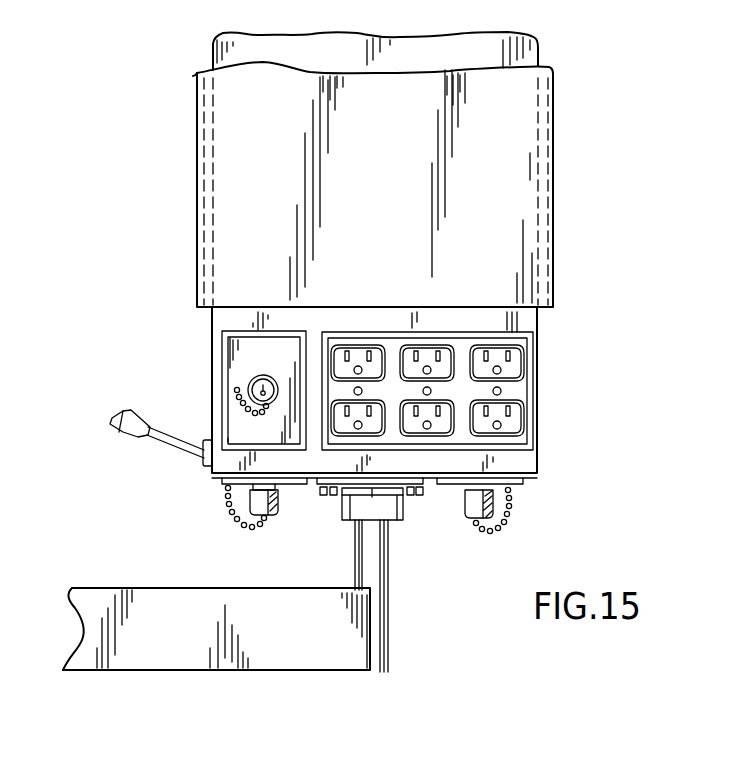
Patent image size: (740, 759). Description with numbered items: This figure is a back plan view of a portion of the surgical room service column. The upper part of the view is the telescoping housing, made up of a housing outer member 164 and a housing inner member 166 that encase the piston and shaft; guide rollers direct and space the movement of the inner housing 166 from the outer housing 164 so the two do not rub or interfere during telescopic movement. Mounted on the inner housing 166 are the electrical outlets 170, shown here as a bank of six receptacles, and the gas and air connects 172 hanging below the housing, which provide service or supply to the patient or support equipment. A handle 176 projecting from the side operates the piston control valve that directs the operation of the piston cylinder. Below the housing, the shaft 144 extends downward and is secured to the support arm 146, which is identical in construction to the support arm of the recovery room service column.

The shaft 144 is at (382, 563).
The support arm 146 is at (167, 597).
The housing outer member 164 is at (524, 195).
The housing inner member 166 is at (525, 323).
The electrical outlets 170 is at (518, 392).
The gas and air connects 172 is at (274, 506).
The handle 176 is at (133, 428).